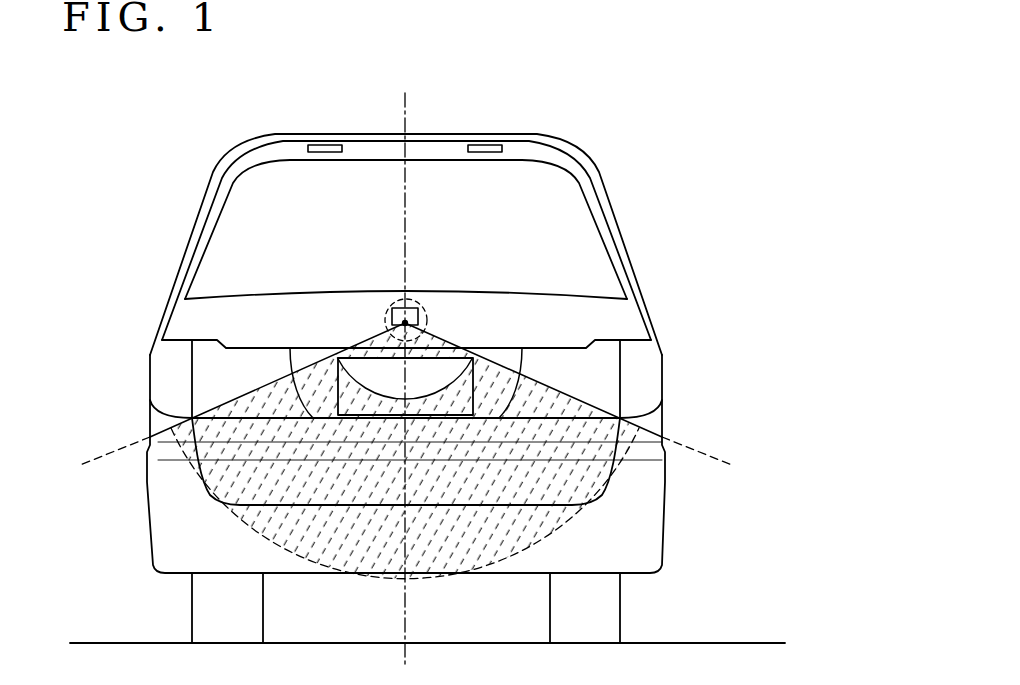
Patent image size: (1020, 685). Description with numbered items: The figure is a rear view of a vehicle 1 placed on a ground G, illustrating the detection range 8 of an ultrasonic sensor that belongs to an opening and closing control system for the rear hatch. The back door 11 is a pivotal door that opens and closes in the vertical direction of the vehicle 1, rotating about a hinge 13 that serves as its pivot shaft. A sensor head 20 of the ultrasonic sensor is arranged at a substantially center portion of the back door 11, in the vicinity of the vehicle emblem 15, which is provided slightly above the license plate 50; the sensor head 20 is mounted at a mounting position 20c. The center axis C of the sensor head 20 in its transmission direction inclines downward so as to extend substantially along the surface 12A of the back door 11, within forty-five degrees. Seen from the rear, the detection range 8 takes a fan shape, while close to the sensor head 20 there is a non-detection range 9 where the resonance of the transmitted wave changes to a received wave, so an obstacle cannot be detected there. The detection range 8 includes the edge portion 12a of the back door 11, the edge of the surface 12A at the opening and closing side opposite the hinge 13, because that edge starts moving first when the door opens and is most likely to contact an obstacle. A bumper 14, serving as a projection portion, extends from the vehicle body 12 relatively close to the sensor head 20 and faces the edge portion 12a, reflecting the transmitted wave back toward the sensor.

The vehicle 1 is at (656, 159).
The detection range 8 is at (273, 535).
The non-detection range 9 is at (425, 356).
The back door 11 is at (628, 312).
The vehicle body 12 is at (653, 367).
The surface of the back door 12A is at (221, 373).
The edge portion 12a is at (500, 508).
The hinge 13 is at (325, 144).
The bumper 14 is at (650, 535).
The vehicle emblem 15 is at (383, 306).
The sensor head 20 is at (418, 305).
The mounting position 20c is at (391, 318).
The license plate 50 is at (322, 362).
The center axis C is at (407, 212).
The ground G is at (120, 642).